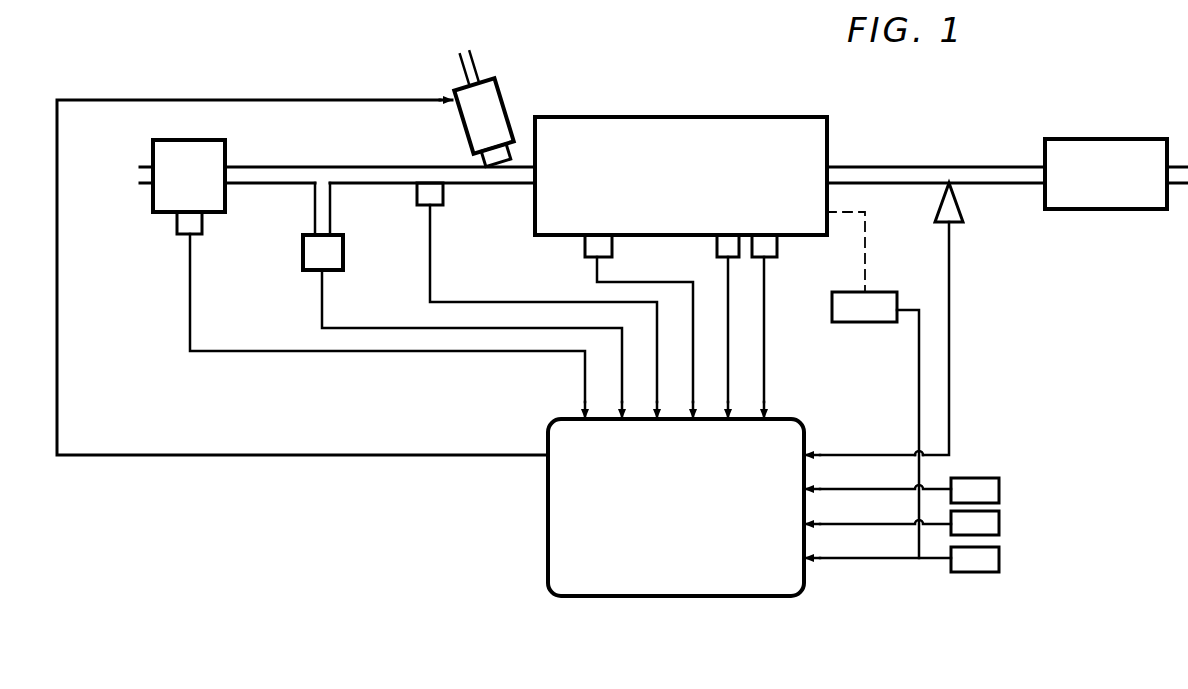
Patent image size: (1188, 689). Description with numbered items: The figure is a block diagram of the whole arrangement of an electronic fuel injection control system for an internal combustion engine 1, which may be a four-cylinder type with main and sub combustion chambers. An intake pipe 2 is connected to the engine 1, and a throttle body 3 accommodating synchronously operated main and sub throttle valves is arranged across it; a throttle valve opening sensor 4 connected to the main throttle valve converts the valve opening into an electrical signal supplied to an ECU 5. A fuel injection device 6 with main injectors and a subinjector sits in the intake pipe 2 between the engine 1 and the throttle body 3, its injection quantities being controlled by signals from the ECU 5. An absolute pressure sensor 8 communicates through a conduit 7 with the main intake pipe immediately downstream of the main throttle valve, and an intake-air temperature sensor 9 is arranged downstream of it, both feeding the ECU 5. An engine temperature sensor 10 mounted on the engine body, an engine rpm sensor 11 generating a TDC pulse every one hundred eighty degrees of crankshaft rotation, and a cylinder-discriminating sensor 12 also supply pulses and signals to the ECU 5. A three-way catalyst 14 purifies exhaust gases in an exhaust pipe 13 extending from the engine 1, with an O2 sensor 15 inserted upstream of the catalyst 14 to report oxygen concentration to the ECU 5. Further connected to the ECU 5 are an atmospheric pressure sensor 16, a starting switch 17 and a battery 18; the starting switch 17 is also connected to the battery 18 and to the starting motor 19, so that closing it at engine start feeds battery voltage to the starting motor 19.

The internal combustion engine 1 is at (735, 117).
The intake pipe 2 is at (373, 168).
The throttle body 3 is at (222, 152).
The throttle valve opening sensor 4 is at (203, 224).
The ECU 5 is at (557, 572).
The fuel injection device 6 is at (497, 106).
The conduit 7 is at (330, 208).
The absolute pressure sensor 8 is at (343, 255).
The intake-air temperature sensor 9 is at (443, 198).
The engine temperature sensor 10 is at (583, 250).
The engine rpm sensor 11 is at (715, 248).
The cylinder-discriminating sensor 12 is at (778, 250).
The exhaust pipe 13 is at (916, 165).
The three-way catalyst 14 is at (1130, 140).
The O2 sensor 15 is at (960, 206).
The atmospheric pressure sensor 16 is at (999, 487).
The starting switch 17 is at (999, 565).
The battery 18 is at (999, 522).
The starting motor 19 is at (858, 323).